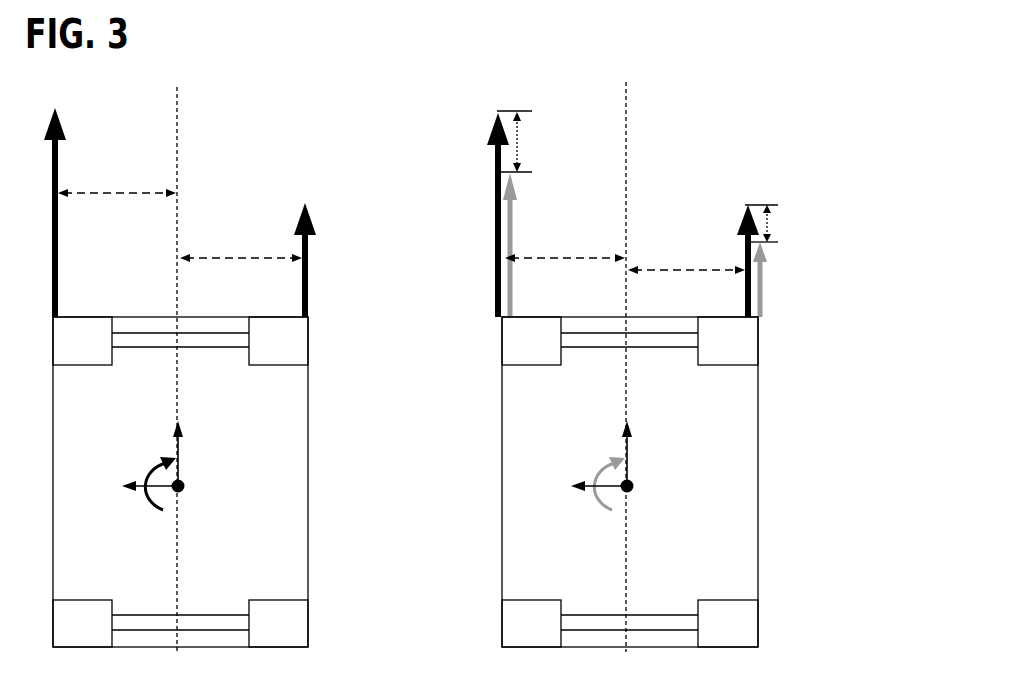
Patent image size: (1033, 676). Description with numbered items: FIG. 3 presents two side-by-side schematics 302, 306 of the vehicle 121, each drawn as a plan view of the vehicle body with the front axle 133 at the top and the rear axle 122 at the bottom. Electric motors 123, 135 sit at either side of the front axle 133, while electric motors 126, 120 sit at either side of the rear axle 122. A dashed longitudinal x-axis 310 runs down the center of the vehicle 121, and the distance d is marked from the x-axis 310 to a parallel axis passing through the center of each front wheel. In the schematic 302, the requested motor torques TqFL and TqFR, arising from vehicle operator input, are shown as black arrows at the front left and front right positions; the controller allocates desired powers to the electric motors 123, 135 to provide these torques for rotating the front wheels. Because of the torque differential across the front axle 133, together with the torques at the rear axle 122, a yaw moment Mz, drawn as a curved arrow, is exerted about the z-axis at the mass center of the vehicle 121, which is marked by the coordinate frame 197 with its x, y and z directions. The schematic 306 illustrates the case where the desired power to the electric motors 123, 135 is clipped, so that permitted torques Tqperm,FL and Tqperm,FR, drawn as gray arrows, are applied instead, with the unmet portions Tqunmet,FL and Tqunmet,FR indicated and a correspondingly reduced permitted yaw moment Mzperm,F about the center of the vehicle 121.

The schematic 302 is at (173, 76).
The schematic 306 is at (643, 73).
The x-axis 310 is at (177, 135).
The vehicle 121 is at (280, 500).
The electric motor 123 is at (307, 341).
The electric motor 135 is at (503, 341).
The front axle 133 is at (140, 347).
The rear axle 122 is at (130, 620).
The electric motor 126 is at (307, 623).
The electric motor 120 is at (503, 623).
The vehicle coordinate system origin 197 is at (177, 452).